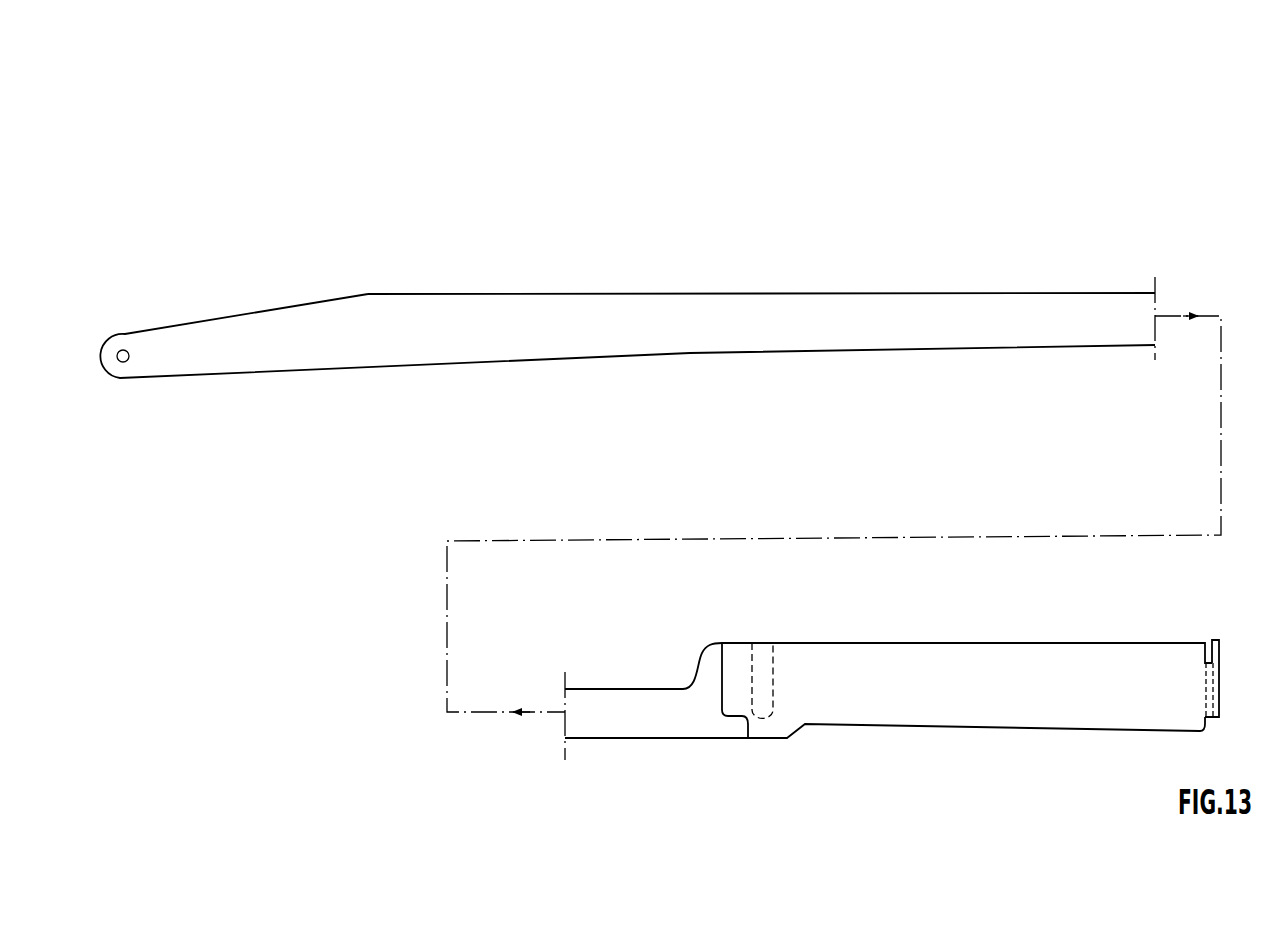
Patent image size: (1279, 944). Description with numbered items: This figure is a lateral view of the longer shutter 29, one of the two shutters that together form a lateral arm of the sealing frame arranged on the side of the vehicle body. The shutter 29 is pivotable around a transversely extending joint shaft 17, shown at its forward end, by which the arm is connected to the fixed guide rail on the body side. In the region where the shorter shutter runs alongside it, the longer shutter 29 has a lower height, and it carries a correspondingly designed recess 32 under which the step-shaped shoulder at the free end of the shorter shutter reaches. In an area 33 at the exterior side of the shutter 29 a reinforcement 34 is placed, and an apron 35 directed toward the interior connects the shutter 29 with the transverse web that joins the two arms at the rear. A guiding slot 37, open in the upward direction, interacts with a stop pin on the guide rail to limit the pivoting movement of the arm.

The shaft 17 is at (121, 362).
The longer shutter 29 is at (740, 305).
The recess 32 is at (742, 719).
The area 33 is at (973, 729).
The reinforcement 34 is at (1097, 705).
The apron 35 is at (1222, 650).
The guiding slot 37 is at (762, 666).